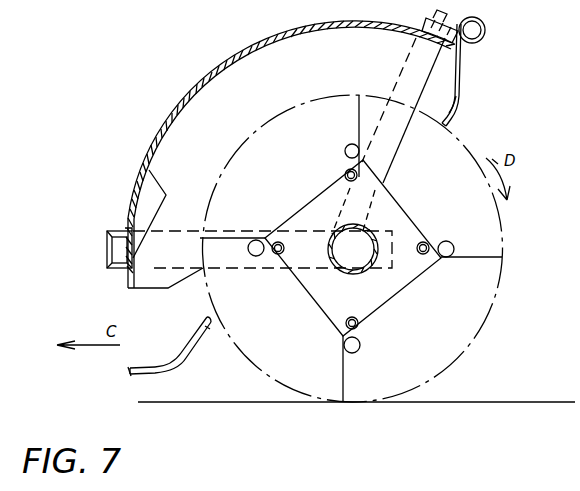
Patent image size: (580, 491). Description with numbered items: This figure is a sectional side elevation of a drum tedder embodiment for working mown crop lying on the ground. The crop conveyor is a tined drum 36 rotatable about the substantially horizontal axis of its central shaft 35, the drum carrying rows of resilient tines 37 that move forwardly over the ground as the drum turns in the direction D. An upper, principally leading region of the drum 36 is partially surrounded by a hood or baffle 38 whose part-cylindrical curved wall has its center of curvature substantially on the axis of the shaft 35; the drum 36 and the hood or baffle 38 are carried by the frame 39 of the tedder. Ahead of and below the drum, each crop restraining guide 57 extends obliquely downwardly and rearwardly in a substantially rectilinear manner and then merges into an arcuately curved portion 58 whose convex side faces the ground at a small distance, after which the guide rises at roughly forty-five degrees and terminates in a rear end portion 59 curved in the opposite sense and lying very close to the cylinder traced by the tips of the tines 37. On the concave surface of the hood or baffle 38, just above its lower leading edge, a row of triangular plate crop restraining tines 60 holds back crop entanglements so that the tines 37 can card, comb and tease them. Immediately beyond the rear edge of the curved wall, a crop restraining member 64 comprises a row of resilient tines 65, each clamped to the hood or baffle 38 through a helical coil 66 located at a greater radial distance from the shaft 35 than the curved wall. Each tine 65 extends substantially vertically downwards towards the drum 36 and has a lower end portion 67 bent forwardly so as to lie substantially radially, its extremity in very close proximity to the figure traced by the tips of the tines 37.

The central shaft 35 is at (354, 256).
The tined drum 36 is at (400, 316).
The resilient tines 37 is at (358, 127).
The hood or baffle 38 is at (238, 50).
The frame 39 is at (107, 250).
The crop restraining guide 57 is at (120, 384).
The arcuately curved portion 58 is at (162, 368).
The rear end portion 59 is at (208, 328).
The crop restraining tines 60 is at (166, 194).
The crop restraining member 64 is at (474, 88).
The resilient tines 65 is at (460, 102).
The helical coil 66 is at (485, 30).
The lower end portion 67 is at (443, 120).